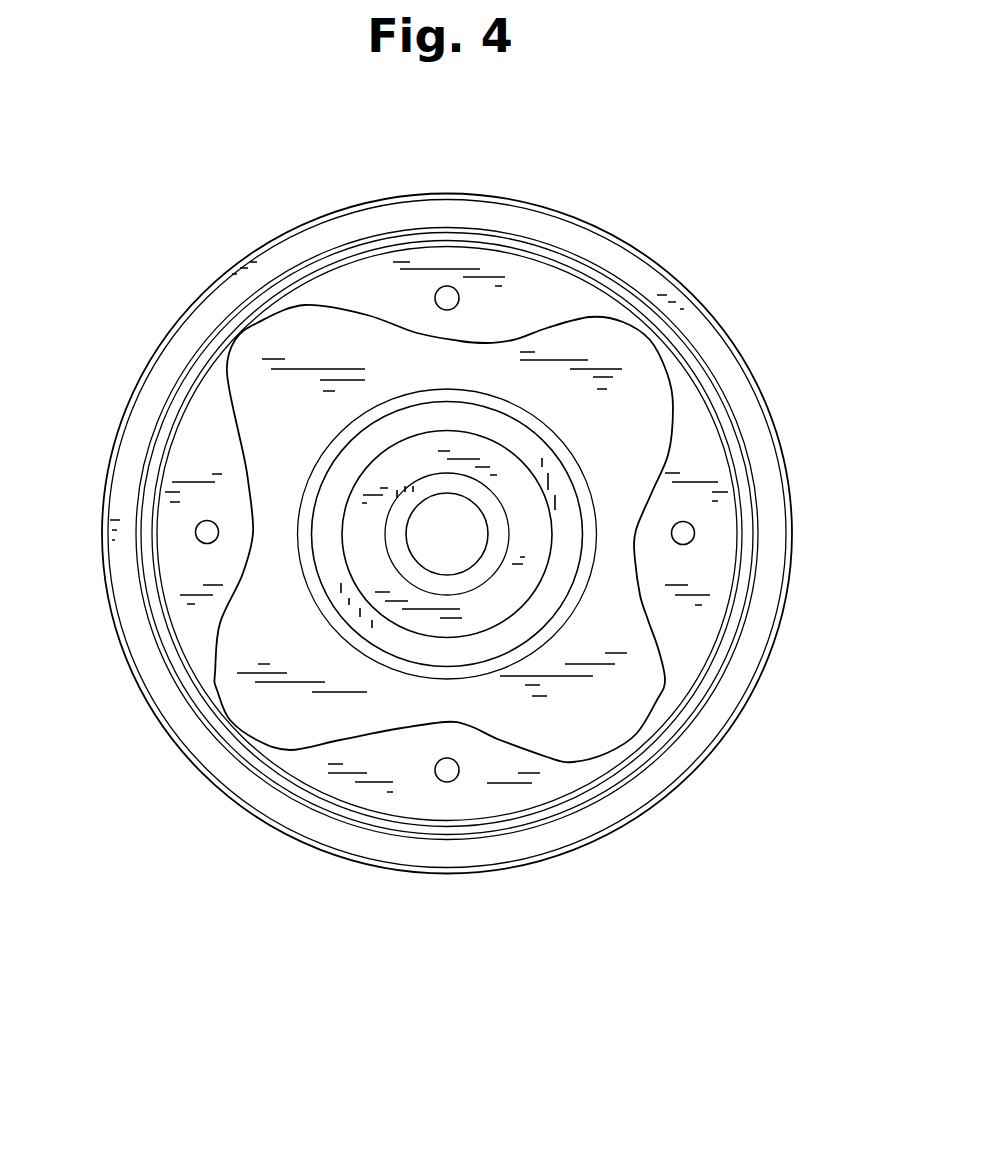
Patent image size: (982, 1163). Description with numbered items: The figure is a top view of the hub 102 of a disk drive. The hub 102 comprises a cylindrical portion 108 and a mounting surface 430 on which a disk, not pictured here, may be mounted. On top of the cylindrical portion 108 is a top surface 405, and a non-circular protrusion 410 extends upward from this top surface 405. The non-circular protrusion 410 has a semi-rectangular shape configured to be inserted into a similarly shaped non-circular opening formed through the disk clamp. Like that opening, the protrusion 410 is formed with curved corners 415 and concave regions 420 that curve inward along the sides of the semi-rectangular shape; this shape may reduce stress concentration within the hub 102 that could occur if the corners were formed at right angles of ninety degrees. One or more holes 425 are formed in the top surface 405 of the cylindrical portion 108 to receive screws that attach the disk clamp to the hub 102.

The hub 102 is at (707, 825).
The cylindrical portion 108 is at (152, 714).
The top surface 405 is at (425, 280).
The non-circular protrusion 410 is at (587, 359).
The curved corners 415 is at (243, 343).
The concave regions 420 is at (250, 530).
The holes 425 is at (443, 773).
The mounting surface 430 is at (243, 784).